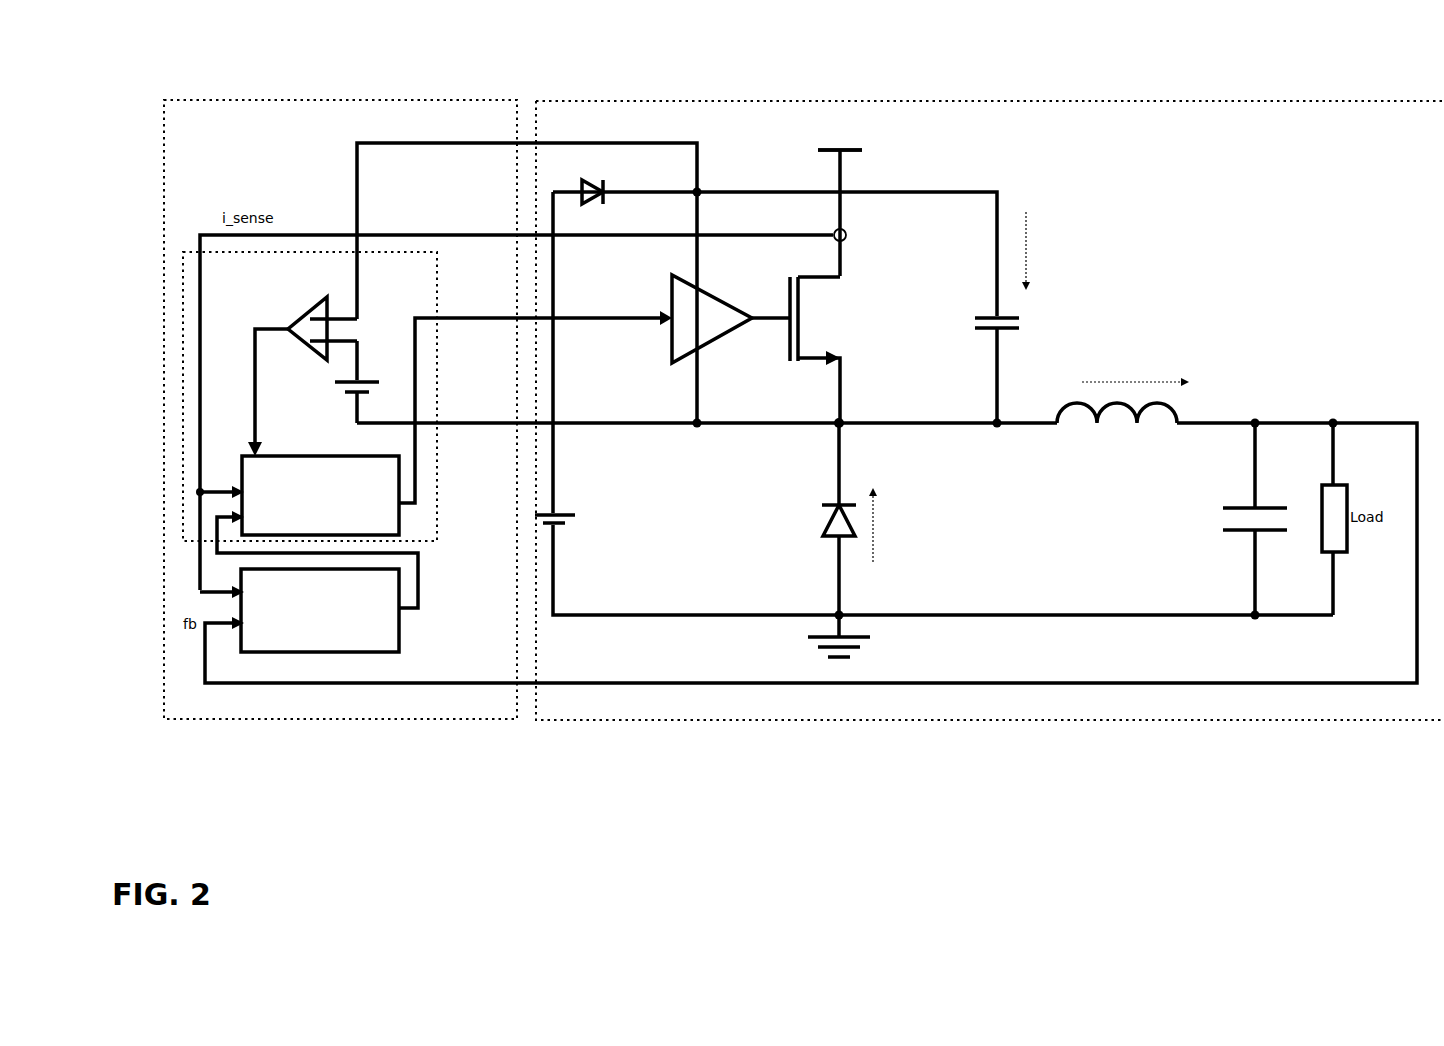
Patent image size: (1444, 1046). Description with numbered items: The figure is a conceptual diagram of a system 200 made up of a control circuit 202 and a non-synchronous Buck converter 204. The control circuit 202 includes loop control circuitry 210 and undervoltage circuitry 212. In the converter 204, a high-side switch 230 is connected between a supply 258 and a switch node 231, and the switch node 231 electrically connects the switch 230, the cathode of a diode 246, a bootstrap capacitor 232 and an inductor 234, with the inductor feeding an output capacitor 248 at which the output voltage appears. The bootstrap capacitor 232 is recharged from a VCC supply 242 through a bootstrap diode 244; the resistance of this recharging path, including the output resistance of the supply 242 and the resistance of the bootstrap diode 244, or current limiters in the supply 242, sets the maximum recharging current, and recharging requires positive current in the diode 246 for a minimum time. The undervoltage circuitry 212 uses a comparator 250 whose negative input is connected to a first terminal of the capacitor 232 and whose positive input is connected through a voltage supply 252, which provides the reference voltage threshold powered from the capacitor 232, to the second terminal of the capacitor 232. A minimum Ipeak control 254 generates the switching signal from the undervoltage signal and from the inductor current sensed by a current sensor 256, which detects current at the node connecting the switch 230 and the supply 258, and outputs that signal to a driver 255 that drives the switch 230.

The system 200 is at (256, 48).
The control circuit 202 is at (377, 100).
The non-synchronous Buck converter 204 is at (1162, 101).
The loop control circuitry 210 is at (400, 638).
The undervoltage circuitry 212 is at (438, 295).
The high-side switch 230 is at (842, 278).
The switch node 231 is at (835, 420).
The bootstrap capacitor 232 is at (1013, 319).
The inductor 234 is at (1177, 418).
The VCC supply 242 is at (580, 513).
The bootstrap diode 244 is at (620, 192).
The diode 246 is at (837, 505).
The output capacitor 248 is at (1240, 507).
The comparator 250 is at (315, 303).
The voltage supply 252 is at (345, 382).
The minimum Ipeak control 254 is at (337, 455).
The driver 255 is at (713, 298).
The current sensor 256 is at (832, 231).
The supply VIN 258 is at (820, 148).